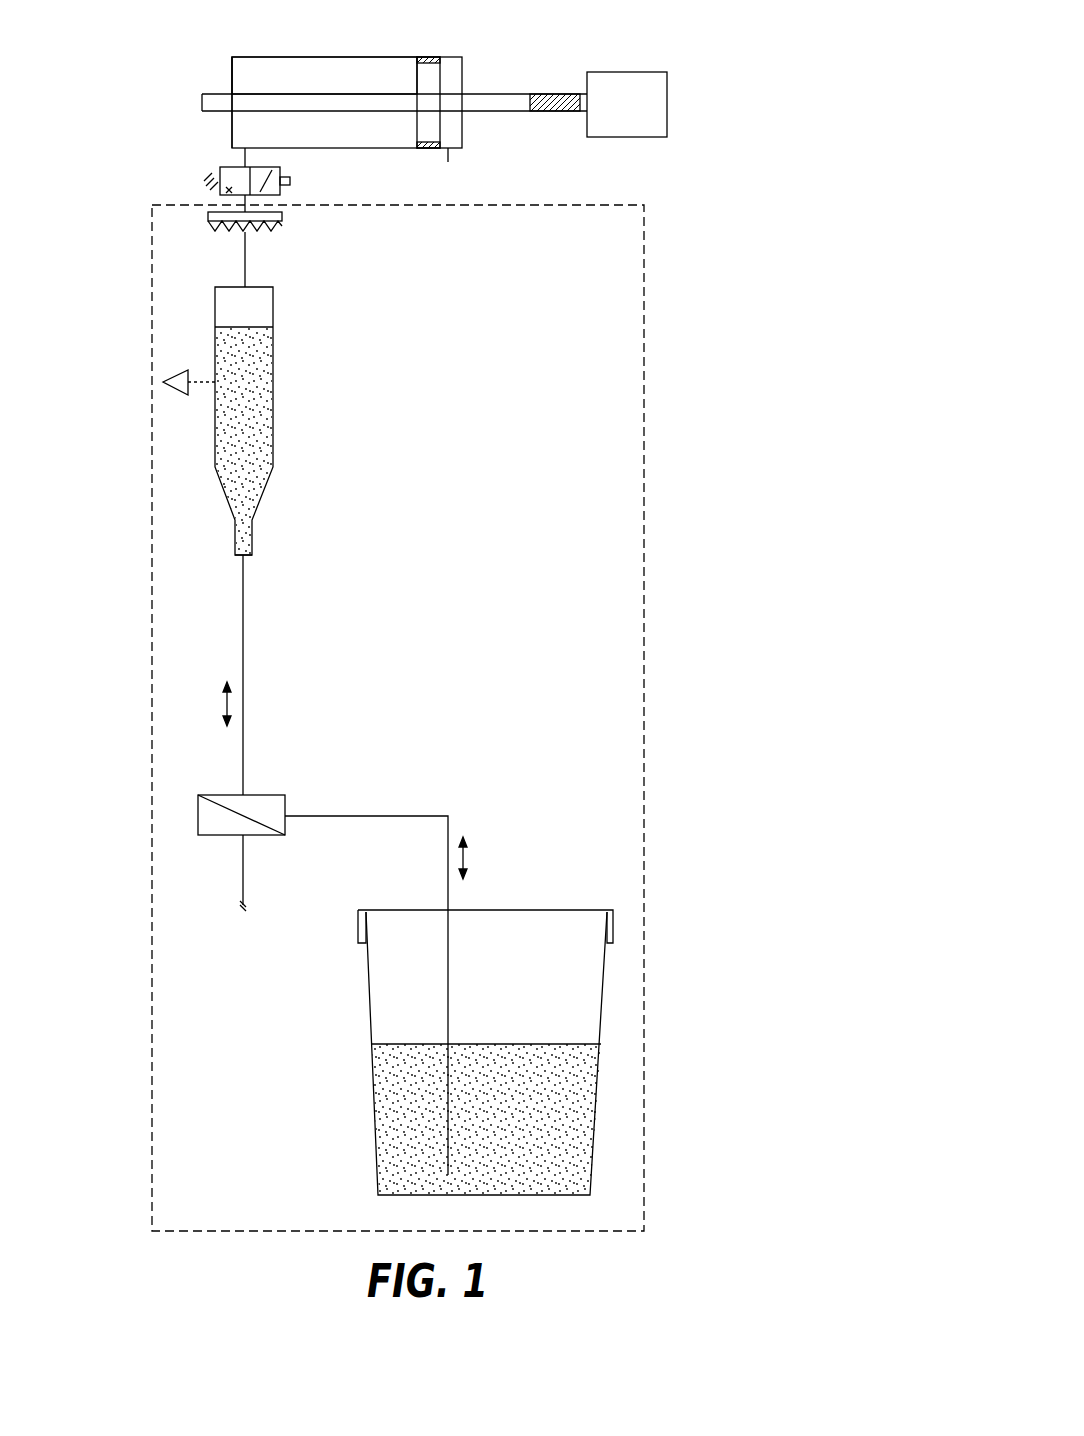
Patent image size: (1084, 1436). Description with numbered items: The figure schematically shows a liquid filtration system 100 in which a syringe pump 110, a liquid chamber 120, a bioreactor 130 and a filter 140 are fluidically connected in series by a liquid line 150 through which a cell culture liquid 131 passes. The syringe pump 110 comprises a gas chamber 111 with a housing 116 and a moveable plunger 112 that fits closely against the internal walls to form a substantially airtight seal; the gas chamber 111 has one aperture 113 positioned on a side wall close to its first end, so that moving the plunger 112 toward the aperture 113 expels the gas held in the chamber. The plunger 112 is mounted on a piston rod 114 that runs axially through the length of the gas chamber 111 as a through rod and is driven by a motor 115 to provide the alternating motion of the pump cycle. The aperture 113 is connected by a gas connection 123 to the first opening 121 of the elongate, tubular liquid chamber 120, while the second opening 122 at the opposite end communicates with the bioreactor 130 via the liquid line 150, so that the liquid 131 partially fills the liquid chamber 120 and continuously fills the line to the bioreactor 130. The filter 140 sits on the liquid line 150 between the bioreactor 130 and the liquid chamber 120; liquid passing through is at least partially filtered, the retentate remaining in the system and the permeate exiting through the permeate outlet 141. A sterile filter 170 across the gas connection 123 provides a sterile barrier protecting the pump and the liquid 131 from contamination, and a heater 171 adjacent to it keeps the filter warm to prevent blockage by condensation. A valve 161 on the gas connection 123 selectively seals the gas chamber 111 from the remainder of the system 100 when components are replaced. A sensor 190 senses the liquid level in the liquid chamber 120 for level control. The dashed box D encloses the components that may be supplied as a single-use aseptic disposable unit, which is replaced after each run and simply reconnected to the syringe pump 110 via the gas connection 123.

The liquid filtration system 100 is at (699, 220).
The syringe pump 110 is at (380, 57).
The gas chamber 111 is at (248, 70).
The plunger 112 is at (430, 72).
The aperture 113 is at (245, 150).
The piston rod 114 is at (316, 94).
The motor 115 is at (667, 86).
The housing 116 is at (232, 78).
The liquid chamber 120 is at (215, 300).
The first opening 121 is at (260, 287).
The second opening 122 is at (243, 556).
The gas connection 123 is at (245, 264).
The bioreactor 130 is at (368, 994).
The liquid 131 is at (265, 408).
The filter 140 is at (198, 816).
The permeate outlet 141 is at (248, 888).
The liquid line 150 is at (243, 626).
The valve 161 is at (220, 174).
The sterile filter 170 is at (208, 216).
The heater 171 is at (282, 228).
The sensor 190 is at (183, 390).
The box / disposable unit D is at (644, 474).